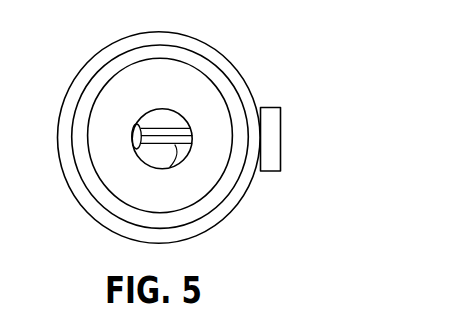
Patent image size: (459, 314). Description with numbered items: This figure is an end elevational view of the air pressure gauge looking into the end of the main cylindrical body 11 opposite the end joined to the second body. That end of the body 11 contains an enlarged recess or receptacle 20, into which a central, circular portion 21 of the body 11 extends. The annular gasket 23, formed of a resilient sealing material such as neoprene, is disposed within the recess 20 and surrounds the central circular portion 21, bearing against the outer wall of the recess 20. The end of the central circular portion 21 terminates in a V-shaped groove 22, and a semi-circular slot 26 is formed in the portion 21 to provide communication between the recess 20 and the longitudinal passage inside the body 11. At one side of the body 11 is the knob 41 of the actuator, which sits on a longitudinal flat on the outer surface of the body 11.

The recess 20 is at (74, 183).
The main cylindrical body 11 is at (218, 227).
The annular gasket 23 is at (213, 122).
The knob 41 is at (282, 116).
The central circular portion 21 is at (168, 110).
The V-shaped groove 22 is at (170, 167).
The semi-circular slot 26 is at (138, 146).